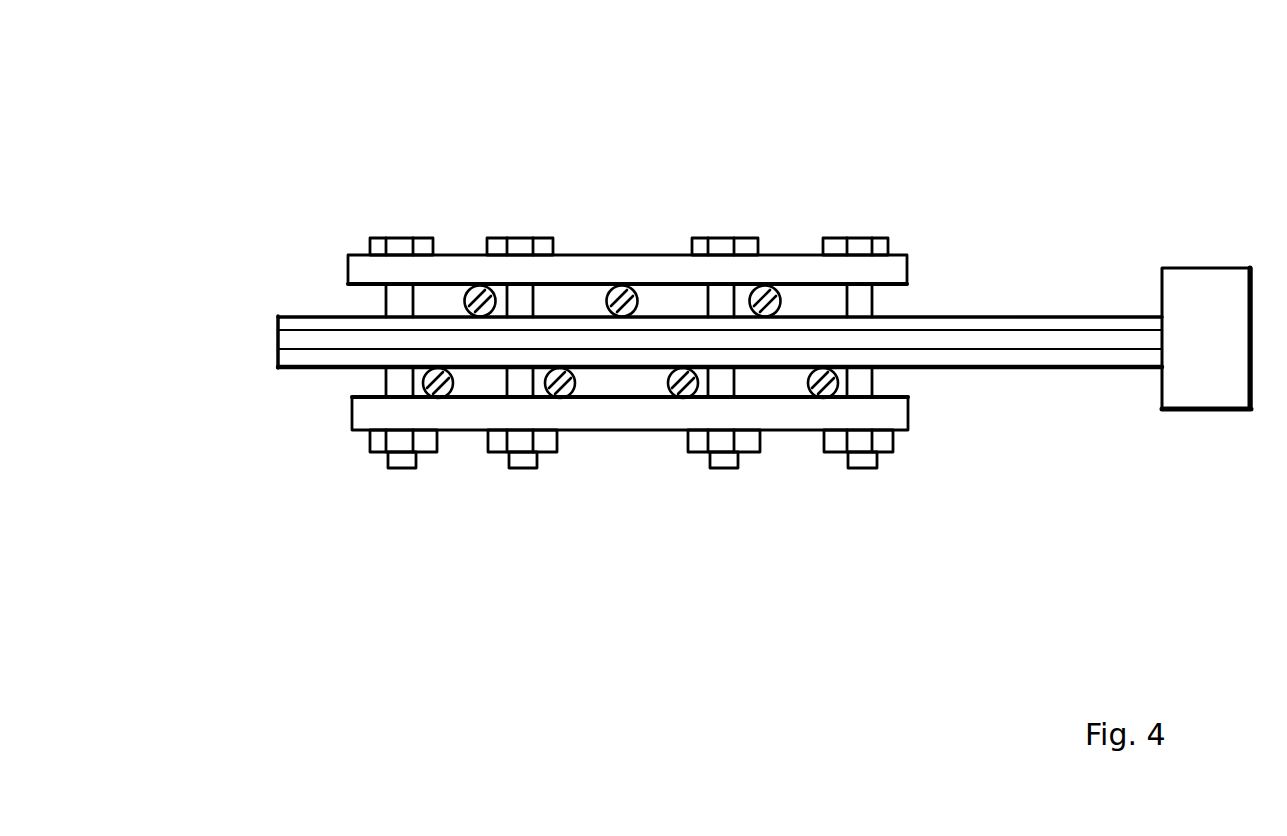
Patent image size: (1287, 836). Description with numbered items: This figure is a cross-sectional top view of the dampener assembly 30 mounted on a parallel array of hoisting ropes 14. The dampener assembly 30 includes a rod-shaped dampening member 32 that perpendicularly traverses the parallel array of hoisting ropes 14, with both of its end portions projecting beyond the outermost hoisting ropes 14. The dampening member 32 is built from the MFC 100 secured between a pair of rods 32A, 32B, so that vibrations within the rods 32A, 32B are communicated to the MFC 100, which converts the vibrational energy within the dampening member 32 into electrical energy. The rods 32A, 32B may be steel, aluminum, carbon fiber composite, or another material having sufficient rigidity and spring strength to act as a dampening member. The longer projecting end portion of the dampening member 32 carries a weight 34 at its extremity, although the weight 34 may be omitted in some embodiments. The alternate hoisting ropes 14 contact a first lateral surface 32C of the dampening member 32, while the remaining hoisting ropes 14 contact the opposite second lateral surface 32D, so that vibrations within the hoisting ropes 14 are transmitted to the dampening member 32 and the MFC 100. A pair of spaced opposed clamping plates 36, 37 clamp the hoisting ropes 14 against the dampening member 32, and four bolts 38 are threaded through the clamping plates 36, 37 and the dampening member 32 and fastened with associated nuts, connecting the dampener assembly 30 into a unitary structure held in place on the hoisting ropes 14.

The dampener assembly 30 is at (990, 137).
The dampening member 32 is at (308, 402).
The rod 32A is at (1037, 330).
The rod 32B is at (1060, 352).
The first lateral surface 32C is at (964, 317).
The second lateral surface 32D is at (966, 372).
The weight 34 is at (1236, 280).
The clamping plate 36 is at (464, 262).
The clamping plate 37 is at (470, 440).
The bolts 38 is at (720, 468).
The hoisting ropes 14 is at (683, 368).
The MFC 100 is at (278, 341).